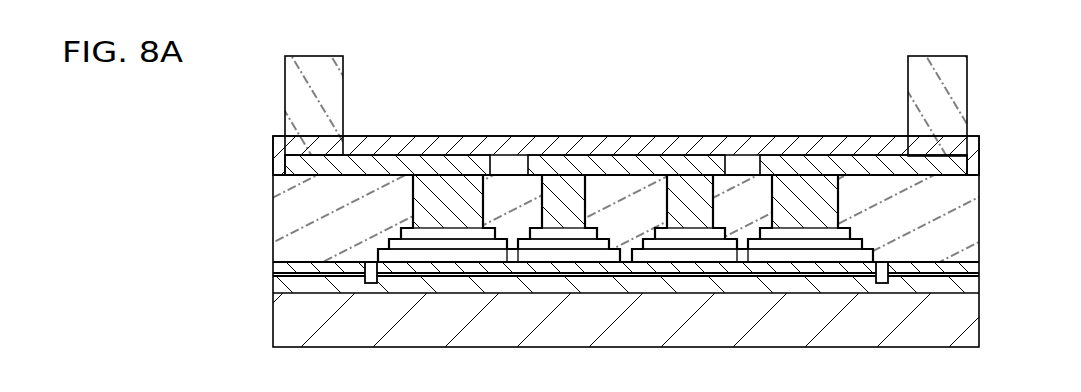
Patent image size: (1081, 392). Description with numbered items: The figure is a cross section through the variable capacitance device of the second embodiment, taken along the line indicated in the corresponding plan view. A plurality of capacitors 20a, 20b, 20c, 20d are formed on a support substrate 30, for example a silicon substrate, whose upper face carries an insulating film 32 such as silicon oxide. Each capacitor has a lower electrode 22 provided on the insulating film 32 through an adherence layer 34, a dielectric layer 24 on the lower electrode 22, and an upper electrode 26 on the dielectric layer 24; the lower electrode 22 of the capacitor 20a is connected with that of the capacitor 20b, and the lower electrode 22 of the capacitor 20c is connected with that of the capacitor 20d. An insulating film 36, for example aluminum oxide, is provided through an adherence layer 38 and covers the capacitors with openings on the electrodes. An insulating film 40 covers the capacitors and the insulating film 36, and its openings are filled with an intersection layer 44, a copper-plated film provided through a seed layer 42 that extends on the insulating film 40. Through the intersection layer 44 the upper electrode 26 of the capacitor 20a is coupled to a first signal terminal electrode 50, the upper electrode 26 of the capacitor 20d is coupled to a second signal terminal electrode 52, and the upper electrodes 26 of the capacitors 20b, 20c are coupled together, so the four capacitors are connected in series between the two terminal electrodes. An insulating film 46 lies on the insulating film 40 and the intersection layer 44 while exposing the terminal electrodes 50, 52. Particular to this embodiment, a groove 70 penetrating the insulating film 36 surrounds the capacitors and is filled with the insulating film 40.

The capacitor 20a is at (806, 257).
The capacitor 20b is at (688, 257).
The capacitor 20c is at (561, 257).
The capacitor 20d is at (437, 257).
The lower electrode 22 is at (872, 258).
The dielectric layer 24 is at (858, 246).
The upper electrode 26 is at (842, 233).
The support substrate 30 is at (979, 328).
The insulating film 32 is at (975, 285).
The adherence layer 34 is at (748, 277).
The insulating film 36 is at (975, 264).
The adherence layer 38 is at (975, 275).
The insulating film 40 is at (967, 186).
The seed layer 42 is at (975, 178).
The intersection layer 44 is at (965, 158).
The insulating film 46 is at (979, 138).
The first signal terminal electrode 50 is at (967, 70).
The second signal terminal electrode 52 is at (343, 68).
The groove 70 is at (373, 284).